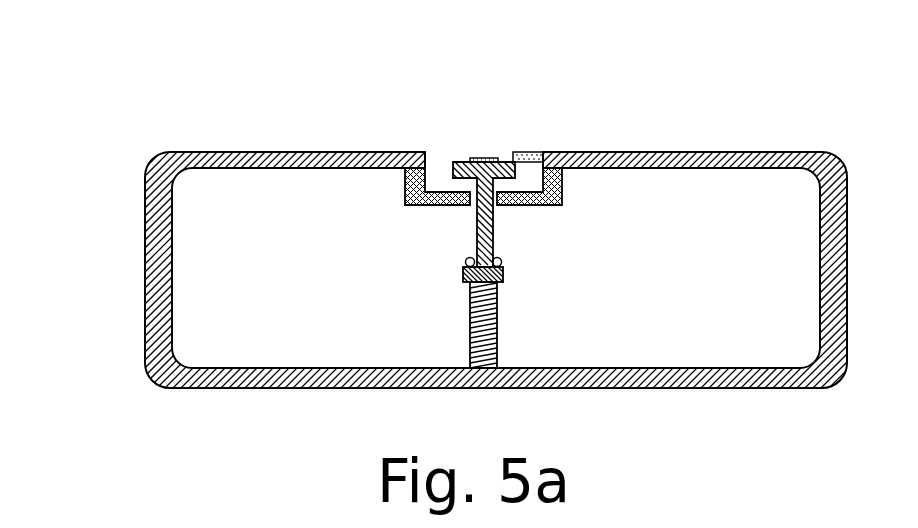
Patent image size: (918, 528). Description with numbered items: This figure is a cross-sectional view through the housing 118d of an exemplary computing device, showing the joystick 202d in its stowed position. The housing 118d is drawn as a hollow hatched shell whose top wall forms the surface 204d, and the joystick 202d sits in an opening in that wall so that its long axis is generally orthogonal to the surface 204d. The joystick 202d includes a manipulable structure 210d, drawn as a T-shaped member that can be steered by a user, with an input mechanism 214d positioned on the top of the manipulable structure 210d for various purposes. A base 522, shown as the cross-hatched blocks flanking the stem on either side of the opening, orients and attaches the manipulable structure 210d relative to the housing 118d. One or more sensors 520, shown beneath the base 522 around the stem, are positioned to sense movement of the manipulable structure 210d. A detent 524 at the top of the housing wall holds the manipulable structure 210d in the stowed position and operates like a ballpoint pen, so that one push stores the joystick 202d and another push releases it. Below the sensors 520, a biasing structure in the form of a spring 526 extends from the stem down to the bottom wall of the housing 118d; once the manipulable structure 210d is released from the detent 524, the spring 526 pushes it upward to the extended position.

The housing 118d is at (459, 248).
The surface 204d is at (205, 148).
The joystick 202d is at (482, 194).
The manipulable structure 210d is at (453, 165).
The input mechanism 214d is at (500, 157).
The detent 524 is at (537, 153).
The base 522 is at (405, 200).
The sensors 520 is at (465, 260).
The spring 526 is at (472, 325).